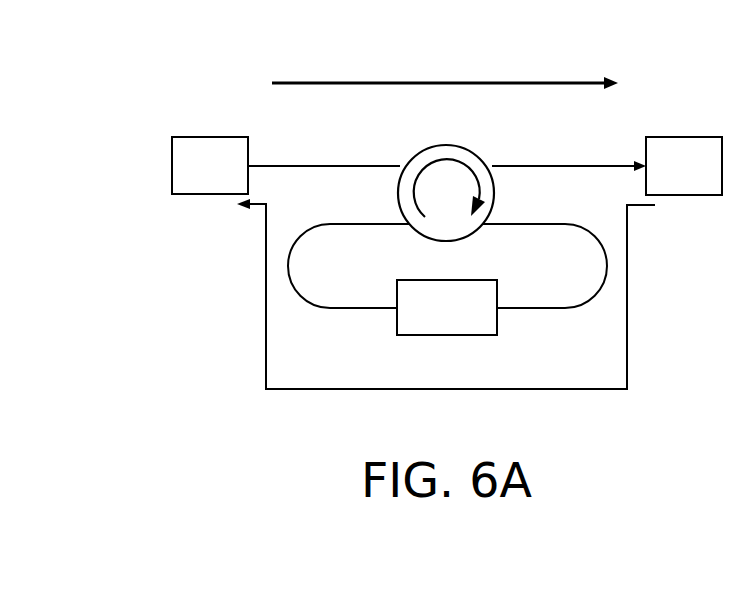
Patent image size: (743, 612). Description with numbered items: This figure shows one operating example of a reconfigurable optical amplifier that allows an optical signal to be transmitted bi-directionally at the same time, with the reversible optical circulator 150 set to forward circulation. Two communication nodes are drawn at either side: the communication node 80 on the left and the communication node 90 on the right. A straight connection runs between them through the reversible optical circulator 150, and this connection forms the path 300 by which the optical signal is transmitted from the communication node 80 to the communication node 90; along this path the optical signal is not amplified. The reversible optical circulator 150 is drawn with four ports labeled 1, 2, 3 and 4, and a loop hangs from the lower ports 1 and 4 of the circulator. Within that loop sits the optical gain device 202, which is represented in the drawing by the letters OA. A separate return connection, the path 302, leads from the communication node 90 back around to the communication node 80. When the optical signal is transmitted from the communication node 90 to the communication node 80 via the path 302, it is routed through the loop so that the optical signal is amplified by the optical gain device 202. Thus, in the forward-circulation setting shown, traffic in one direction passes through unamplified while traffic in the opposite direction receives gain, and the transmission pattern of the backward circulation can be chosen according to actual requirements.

The path 300 is at (444, 82).
The communication node 80 is at (230, 182).
The communication node 90 is at (704, 182).
The reversible optical circulator 150 is at (446, 145).
The circulator port 1 is at (370, 208).
The circulator port 2 is at (324, 147).
The circulator port 3 is at (569, 150).
The circulator port 4 is at (523, 208).
The optical gain device 202 is at (460, 336).
The path 302 is at (266, 297).